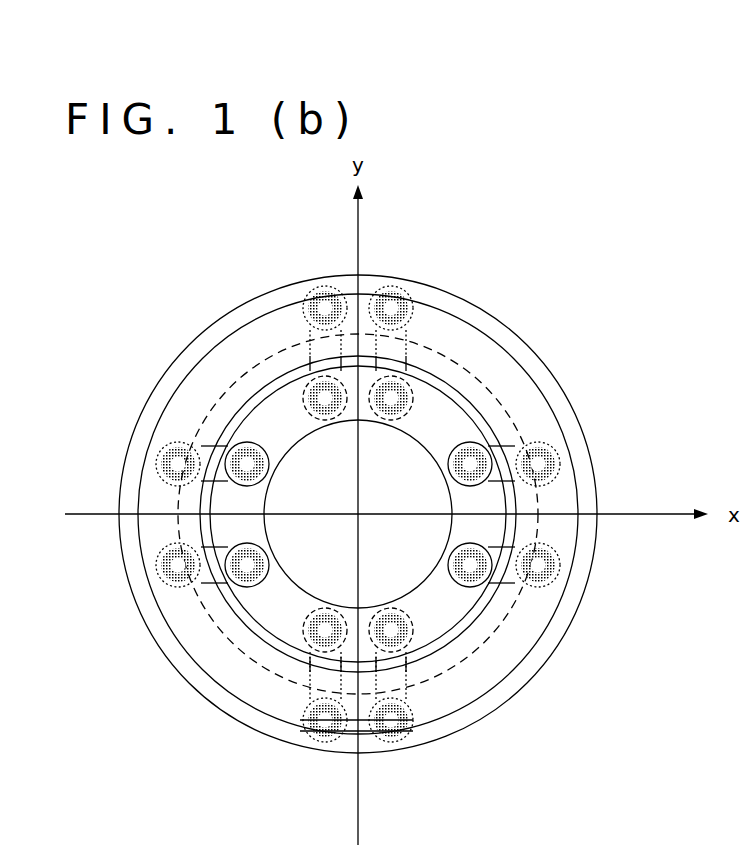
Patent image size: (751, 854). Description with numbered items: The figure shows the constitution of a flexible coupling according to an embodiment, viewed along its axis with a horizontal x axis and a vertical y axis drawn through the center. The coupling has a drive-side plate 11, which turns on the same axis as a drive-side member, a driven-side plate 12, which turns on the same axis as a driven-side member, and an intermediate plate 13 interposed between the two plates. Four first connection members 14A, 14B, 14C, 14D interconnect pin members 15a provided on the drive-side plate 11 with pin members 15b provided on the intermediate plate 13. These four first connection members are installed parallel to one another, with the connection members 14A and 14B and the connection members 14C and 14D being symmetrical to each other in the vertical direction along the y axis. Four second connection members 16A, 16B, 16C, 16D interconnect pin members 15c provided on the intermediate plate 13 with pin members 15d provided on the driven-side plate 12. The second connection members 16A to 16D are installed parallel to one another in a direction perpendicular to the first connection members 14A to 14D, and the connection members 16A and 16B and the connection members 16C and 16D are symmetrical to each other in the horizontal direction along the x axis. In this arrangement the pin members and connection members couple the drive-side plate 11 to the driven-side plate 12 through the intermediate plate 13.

The drive-side plate 11 is at (487, 357).
The driven-side plate 12 is at (377, 275).
The intermediate plate 13 is at (478, 508).
The first connection member 14A is at (225, 447).
The first connection member 14B is at (487, 447).
The first connection member 14C is at (213, 580).
The first connection member 14D is at (487, 580).
The pin member 15a is at (160, 455).
The pin member 15b is at (245, 460).
The pin member 15c is at (364, 742).
The pin member 15d is at (320, 744).
The second connection member 16A is at (312, 368).
The second connection member 16B is at (305, 672).
The second connection member 16C is at (408, 357).
The second connection member 16D is at (415, 687).